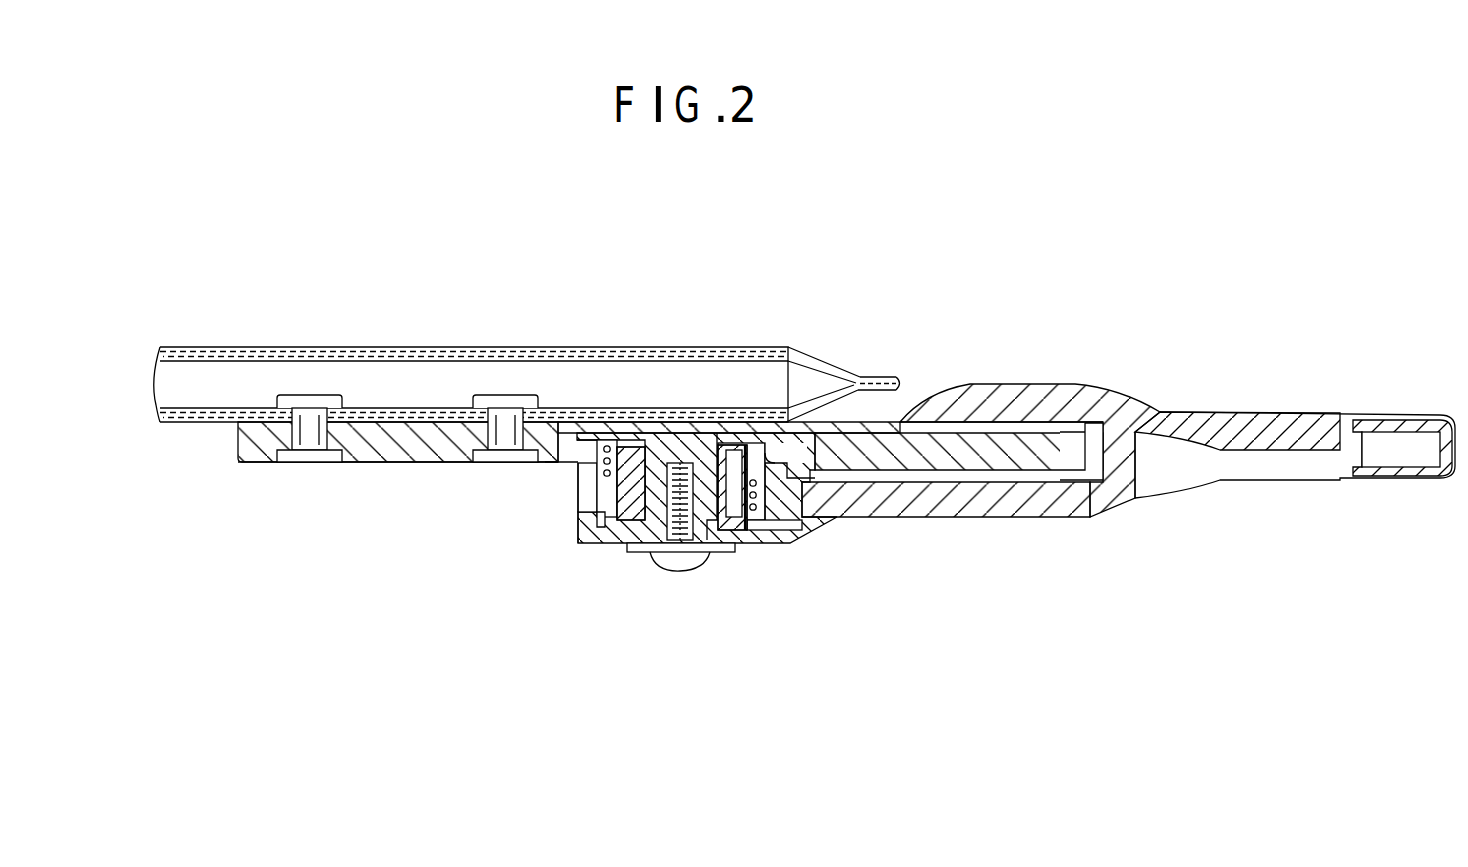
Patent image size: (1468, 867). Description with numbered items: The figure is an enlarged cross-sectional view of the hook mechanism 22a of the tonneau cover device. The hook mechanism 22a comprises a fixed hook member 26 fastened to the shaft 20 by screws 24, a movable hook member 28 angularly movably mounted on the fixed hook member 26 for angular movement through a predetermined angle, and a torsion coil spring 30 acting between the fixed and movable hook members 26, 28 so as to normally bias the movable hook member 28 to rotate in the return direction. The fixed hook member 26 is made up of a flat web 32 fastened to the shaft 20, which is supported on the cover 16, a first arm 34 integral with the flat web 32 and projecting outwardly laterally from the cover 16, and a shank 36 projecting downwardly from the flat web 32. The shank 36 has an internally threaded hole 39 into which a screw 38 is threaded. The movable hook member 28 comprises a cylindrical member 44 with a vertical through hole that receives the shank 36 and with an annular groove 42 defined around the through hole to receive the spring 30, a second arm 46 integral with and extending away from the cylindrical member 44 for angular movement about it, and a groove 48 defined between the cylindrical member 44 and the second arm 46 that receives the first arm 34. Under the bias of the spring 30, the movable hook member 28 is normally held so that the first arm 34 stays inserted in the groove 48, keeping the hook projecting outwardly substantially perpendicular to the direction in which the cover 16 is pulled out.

The hook mechanism 22a is at (1086, 172).
The cover 16 is at (636, 347).
The shaft 20 is at (334, 347).
The screws 24 is at (307, 456).
The fixed hook member 26 is at (378, 462).
The flat web 32 is at (430, 450).
The torsion coil spring 30 is at (580, 513).
The cylindrical member 44 is at (578, 470).
The annular groove 42 is at (605, 527).
The internally threaded hole 39 is at (673, 513).
The screw 38 is at (675, 568).
The shank 36 is at (737, 550).
The first arm 34 is at (958, 423).
The groove 48 is at (1077, 447).
The movable hook member 28 is at (1188, 403).
The second arm 46 is at (1376, 440).